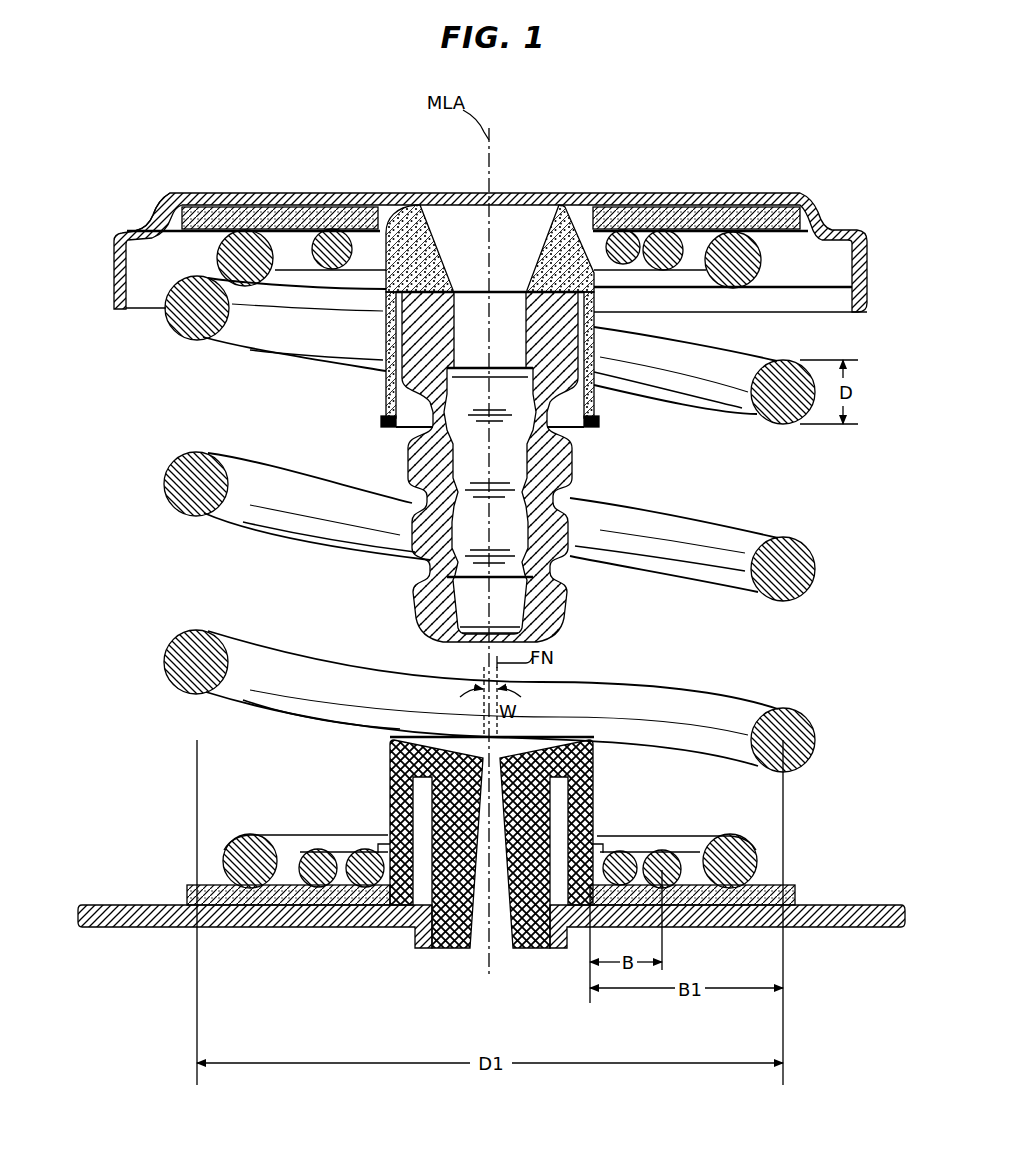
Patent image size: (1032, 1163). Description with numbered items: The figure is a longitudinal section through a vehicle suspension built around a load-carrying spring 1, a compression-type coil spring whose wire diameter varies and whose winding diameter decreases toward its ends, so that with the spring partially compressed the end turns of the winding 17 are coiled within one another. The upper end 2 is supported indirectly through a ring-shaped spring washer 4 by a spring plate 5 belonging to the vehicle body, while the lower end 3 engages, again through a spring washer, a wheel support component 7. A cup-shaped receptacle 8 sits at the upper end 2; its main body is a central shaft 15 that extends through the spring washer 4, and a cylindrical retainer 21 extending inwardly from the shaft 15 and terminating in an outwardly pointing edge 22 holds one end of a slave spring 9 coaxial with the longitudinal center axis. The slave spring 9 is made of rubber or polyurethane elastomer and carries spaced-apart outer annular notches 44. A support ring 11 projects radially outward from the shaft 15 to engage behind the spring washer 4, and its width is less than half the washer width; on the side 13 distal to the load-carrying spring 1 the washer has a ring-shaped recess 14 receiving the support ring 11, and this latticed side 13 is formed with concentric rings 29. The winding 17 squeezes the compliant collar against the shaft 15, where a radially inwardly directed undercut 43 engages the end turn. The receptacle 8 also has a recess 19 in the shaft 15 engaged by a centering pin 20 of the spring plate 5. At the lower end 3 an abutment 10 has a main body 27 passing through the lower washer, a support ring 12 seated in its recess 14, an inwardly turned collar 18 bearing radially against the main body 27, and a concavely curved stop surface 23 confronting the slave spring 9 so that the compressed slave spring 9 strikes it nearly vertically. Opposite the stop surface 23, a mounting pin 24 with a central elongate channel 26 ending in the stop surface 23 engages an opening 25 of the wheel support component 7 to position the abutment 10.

The load-carrying spring 1 is at (810, 539).
The upper end 2 is at (322, 268).
The lower end 3 is at (313, 834).
The spring washer 4 is at (796, 198).
The spring plate 5 is at (168, 194).
The wheel support component 7 is at (125, 929).
The receptacle 8 is at (602, 395).
The slave spring 9 is at (573, 458).
The abutment 10 is at (596, 738).
The support ring 11 is at (365, 218).
The support ring 12 is at (377, 928).
The side 13 is at (748, 208).
The ring-shaped recesses 14 is at (327, 210).
The shaft 15 is at (418, 207).
The winding 17 is at (612, 218).
The collar 18 is at (613, 837).
The recess 19 is at (430, 246).
The centering pin 20 is at (540, 222).
The cylindrical retainer 21 is at (396, 388).
The edge 22 is at (381, 421).
The stop surface 23 is at (543, 757).
The mounting pin 24 is at (533, 950).
The opening 25 is at (445, 950).
The central elongate channel 26 is at (390, 777).
The main body 27 is at (390, 809).
The concentric rings 29 is at (233, 213).
The undercut 43 is at (588, 212).
The outer annular notches 44 is at (578, 437).